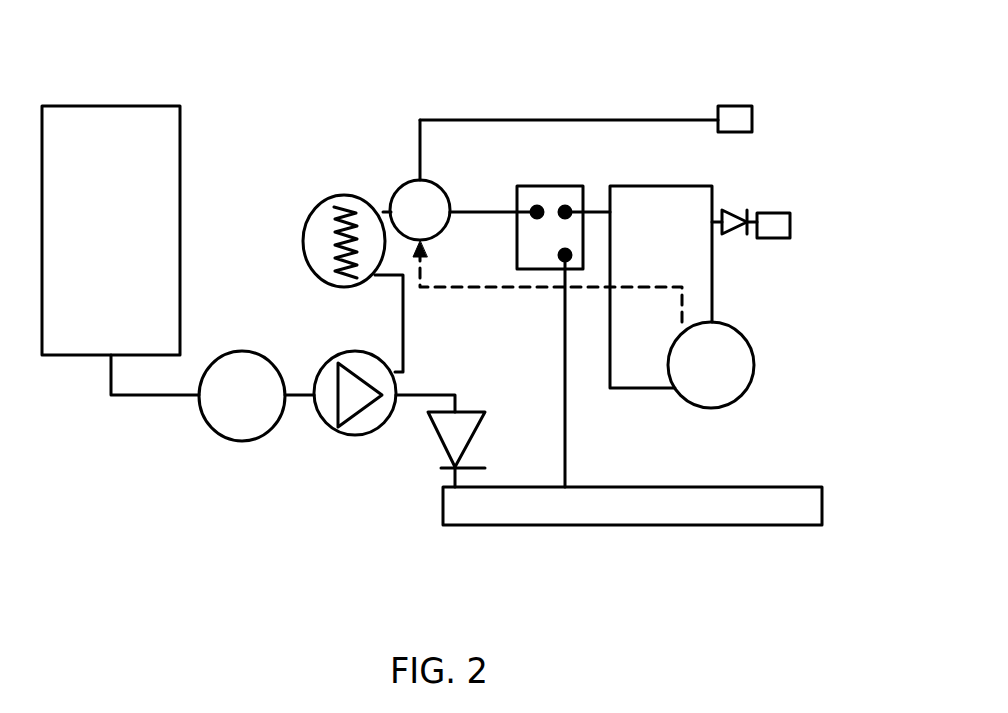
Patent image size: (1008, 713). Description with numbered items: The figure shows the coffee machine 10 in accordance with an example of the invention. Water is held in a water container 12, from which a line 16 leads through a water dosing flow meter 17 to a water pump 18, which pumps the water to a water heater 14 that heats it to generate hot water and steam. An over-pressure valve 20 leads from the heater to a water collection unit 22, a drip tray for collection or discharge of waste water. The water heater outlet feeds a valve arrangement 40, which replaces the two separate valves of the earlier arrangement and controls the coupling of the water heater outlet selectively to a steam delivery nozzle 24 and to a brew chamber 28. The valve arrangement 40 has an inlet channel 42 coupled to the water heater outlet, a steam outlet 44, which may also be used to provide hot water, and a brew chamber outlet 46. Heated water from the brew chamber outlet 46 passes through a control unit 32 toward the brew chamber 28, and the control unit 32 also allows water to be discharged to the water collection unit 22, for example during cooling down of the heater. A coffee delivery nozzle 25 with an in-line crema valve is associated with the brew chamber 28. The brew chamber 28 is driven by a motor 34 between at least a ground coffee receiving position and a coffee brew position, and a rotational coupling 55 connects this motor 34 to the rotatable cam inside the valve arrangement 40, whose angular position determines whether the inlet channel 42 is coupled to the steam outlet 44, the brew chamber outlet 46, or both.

The coffee machine 10 is at (302, 81).
The water container 12 is at (174, 189).
The water heater 14 is at (333, 196).
The supply line 16 is at (126, 396).
The water dosing flow meter 17 is at (258, 441).
The water pump 18 is at (370, 436).
The over-pressure valve 20 is at (480, 425).
The water collection unit 22 is at (788, 487).
The steam delivery nozzle 24 is at (740, 106).
The coffee delivery nozzle 25 is at (775, 213).
The brew chamber 28 is at (712, 280).
The control unit 32 is at (563, 185).
The motor 34 is at (740, 400).
The valve arrangement 40 is at (403, 180).
The inlet channel 42 is at (383, 200).
The steam outlet 44 is at (418, 163).
The brew chamber outlet 46 is at (473, 190).
The rotational coupling 55 is at (428, 290).